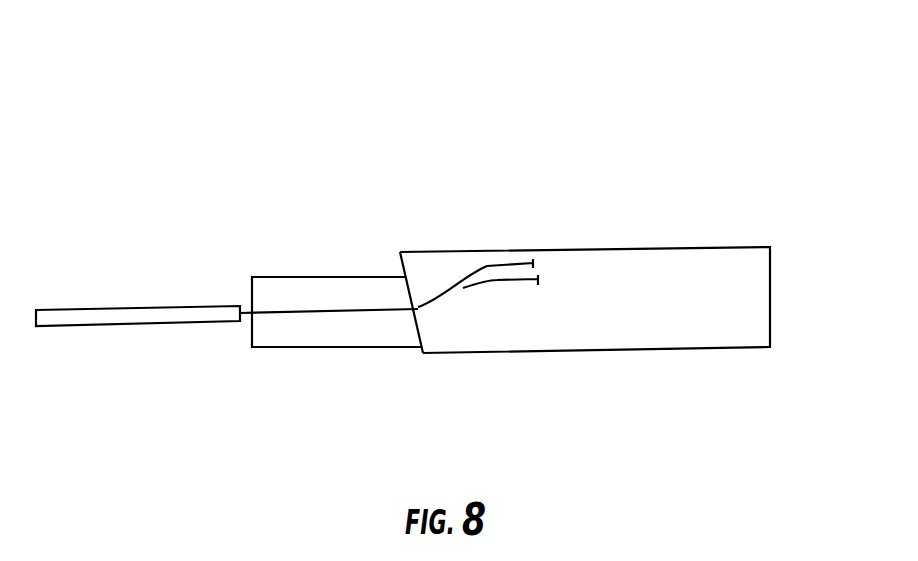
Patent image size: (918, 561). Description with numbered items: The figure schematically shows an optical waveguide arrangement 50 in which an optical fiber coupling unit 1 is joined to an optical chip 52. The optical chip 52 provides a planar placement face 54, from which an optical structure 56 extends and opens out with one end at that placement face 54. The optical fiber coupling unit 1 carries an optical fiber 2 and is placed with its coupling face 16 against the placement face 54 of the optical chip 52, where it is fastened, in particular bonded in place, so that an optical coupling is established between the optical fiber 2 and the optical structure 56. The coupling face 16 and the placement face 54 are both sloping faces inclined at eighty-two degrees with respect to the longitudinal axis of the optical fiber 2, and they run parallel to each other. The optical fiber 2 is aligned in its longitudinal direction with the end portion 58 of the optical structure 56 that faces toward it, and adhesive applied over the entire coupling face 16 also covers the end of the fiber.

The optical fiber coupling unit 1 is at (252, 356).
The optical fiber 2 is at (348, 312).
The coupling face 16 is at (418, 330).
The optical waveguide arrangement 50 is at (462, 168).
The optical chip 52 is at (714, 268).
The placement face 54 is at (407, 292).
The optical structure 56 is at (463, 288).
The end portion 58 is at (417, 306).